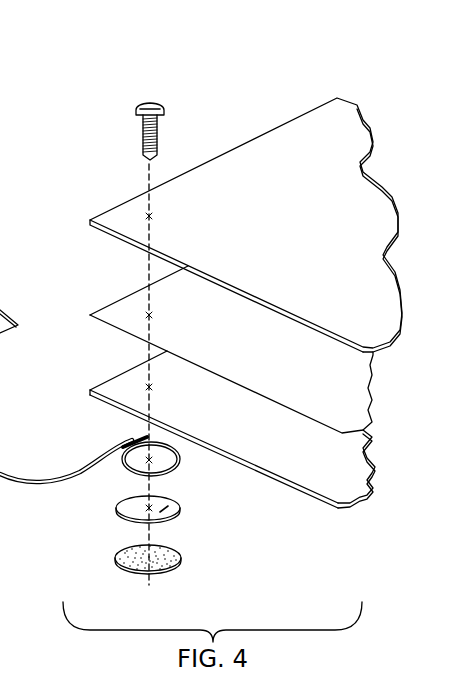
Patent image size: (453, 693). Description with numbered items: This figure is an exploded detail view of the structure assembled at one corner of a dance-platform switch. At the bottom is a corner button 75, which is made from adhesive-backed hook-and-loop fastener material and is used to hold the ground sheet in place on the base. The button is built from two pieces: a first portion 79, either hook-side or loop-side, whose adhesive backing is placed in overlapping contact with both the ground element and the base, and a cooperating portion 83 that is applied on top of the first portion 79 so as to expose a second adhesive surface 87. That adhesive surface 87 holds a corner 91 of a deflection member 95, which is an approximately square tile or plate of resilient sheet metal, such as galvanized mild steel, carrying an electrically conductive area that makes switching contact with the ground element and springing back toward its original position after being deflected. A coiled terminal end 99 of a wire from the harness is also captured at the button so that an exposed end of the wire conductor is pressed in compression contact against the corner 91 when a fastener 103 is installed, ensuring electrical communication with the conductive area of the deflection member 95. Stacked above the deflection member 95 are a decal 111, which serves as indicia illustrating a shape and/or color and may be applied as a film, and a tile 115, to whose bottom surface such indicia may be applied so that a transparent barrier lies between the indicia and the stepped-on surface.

The fastener 103 is at (153, 103).
The tile 115 is at (328, 266).
The decal 111 is at (327, 390).
The corner 91 is at (120, 385).
The deflection member 95 is at (307, 457).
The terminal end 99 is at (83, 472).
The second adhesive surface 87 is at (162, 508).
The cooperating portion 83 is at (132, 508).
The portion 79 is at (123, 568).
The corner button 75 is at (141, 527).